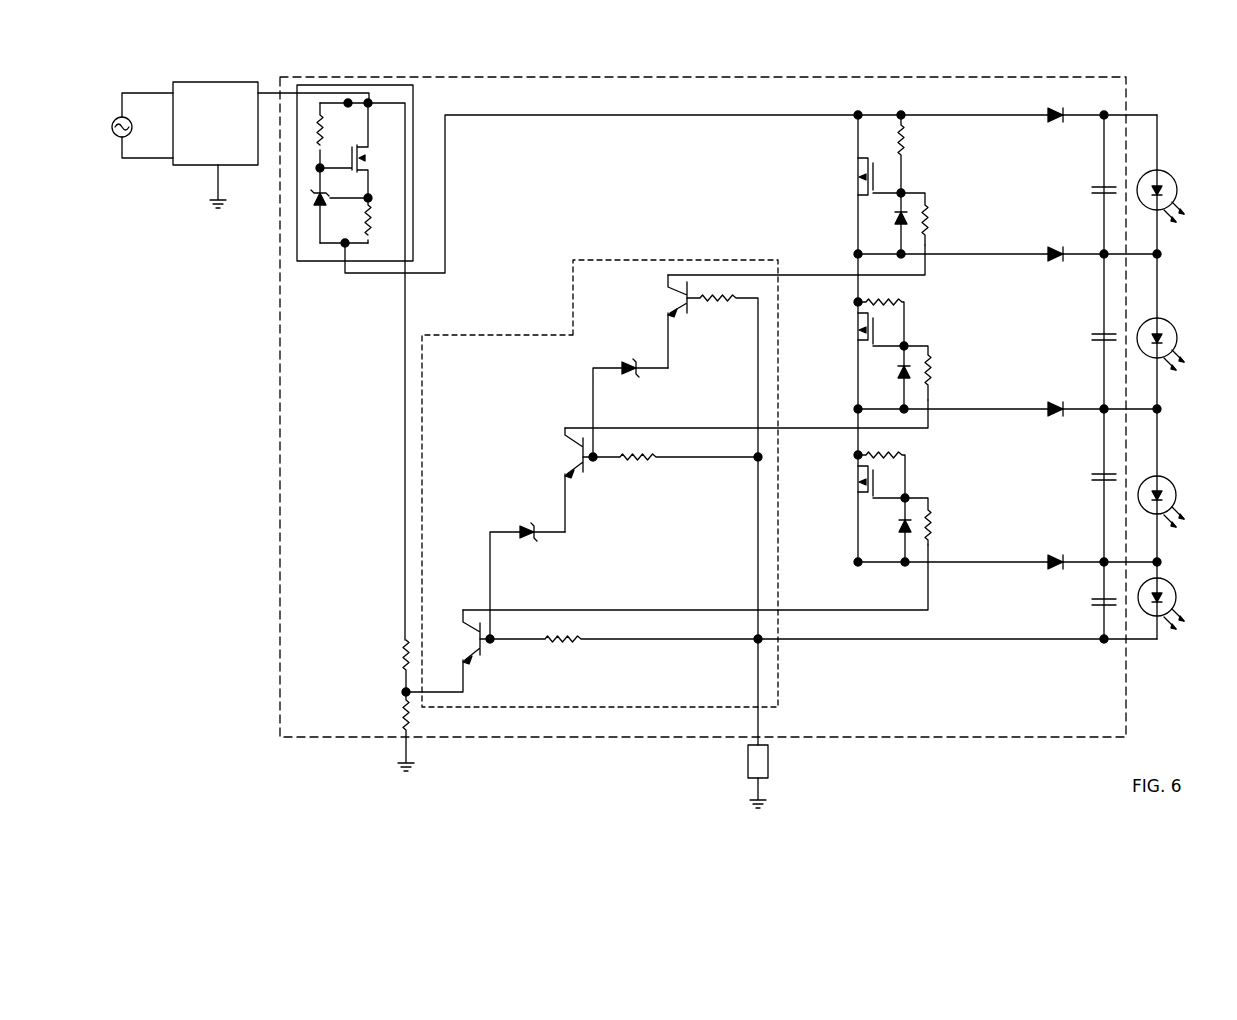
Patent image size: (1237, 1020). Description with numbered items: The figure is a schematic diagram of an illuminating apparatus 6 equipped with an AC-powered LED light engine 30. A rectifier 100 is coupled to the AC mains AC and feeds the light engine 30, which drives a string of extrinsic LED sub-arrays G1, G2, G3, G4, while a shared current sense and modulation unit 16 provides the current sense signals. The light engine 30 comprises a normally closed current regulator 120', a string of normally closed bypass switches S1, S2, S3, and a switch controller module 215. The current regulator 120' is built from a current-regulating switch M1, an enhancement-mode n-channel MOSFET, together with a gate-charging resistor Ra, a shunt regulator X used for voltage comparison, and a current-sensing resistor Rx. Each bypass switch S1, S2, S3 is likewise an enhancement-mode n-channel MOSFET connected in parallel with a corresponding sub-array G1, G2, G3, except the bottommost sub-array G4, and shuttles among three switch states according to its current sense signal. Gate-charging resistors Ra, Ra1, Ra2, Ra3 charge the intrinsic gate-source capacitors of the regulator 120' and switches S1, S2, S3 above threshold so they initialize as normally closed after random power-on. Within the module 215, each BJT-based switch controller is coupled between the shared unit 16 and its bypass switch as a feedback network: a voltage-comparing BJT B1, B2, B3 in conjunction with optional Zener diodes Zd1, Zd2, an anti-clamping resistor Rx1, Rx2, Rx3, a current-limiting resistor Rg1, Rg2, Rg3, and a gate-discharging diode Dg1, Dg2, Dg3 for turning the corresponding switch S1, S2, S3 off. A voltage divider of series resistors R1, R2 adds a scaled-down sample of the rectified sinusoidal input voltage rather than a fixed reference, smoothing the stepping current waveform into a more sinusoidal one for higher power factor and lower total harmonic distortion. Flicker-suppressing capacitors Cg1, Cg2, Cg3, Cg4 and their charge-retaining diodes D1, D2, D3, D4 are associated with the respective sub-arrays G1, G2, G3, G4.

The illuminating apparatus 6 is at (126, 75).
The AC mains AC is at (142, 125).
The rectifier 100 is at (233, 136).
The AC-powered LED light engine 30 is at (1112, 82).
The normally closed current regulator 120' is at (727, 362).
The gate-charging resistor Ra is at (333, 135).
The current-regulating switch M1 is at (358, 150).
The shunt regulator X is at (324, 205).
The current-sensing resistor Rx is at (381, 220).
The switch controller module 215 is at (665, 260).
The BJT B1 is at (663, 321).
The anti-clamping resistor Rx1 is at (722, 520).
The Zener diode Zd1 is at (630, 408).
The BJT B2 is at (558, 480).
The anti-clamping resistor Rx2 is at (670, 471).
The Zener diode Zd2 is at (527, 581).
The BJT B3 is at (443, 651).
The anti-clamping resistor Rx3 is at (818, 653).
The resistor R1 is at (388, 666).
The resistor R2 is at (391, 731).
The shared current sense and modulation unit 16 is at (770, 762).
The normally closed bypass switch S1 is at (863, 176).
The gate-charging resistor Ra1 is at (921, 154).
The gate-discharging diode Dg1 is at (885, 223).
The current-limiting resistor Rg1 is at (934, 219).
The normally closed bypass switch S2 is at (865, 329).
The gate-charging resistor Ra2 is at (878, 292).
The gate-discharging diode Dg2 is at (887, 377).
The current-limiting resistor Rg2 is at (937, 373).
The normally closed bypass switch S3 is at (865, 482).
The gate-charging resistor Ra3 is at (878, 445).
The gate-discharging diode Dg3 is at (887, 530).
The current-limiting resistor Rg3 is at (937, 521).
The charge-retaining diode D1 is at (1058, 127).
The charge-retaining diode D2 is at (1058, 266).
The charge-retaining diode D3 is at (1058, 421).
The charge-retaining diode D4 is at (1058, 551).
The flicker-suppressing capacitor Cg1 is at (1084, 192).
The flicker-suppressing capacitor Cg2 is at (1084, 338).
The flicker-suppressing capacitor Cg3 is at (1084, 478).
The flicker-suppressing capacitor Cg4 is at (1084, 604).
The LED sub-array G1 is at (1176, 196).
The LED sub-array G2 is at (1176, 344).
The LED sub-array G3 is at (1177, 501).
The LED sub-array G4 is at (1177, 603).